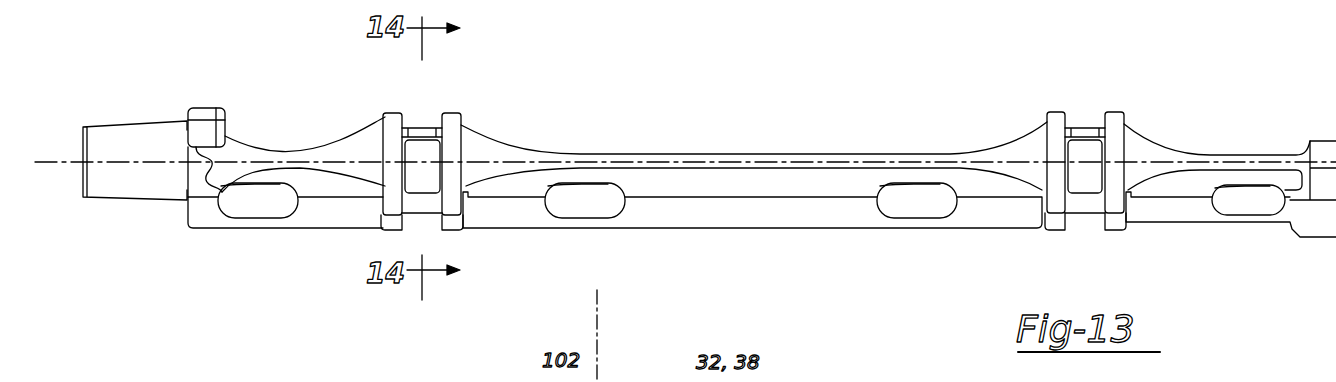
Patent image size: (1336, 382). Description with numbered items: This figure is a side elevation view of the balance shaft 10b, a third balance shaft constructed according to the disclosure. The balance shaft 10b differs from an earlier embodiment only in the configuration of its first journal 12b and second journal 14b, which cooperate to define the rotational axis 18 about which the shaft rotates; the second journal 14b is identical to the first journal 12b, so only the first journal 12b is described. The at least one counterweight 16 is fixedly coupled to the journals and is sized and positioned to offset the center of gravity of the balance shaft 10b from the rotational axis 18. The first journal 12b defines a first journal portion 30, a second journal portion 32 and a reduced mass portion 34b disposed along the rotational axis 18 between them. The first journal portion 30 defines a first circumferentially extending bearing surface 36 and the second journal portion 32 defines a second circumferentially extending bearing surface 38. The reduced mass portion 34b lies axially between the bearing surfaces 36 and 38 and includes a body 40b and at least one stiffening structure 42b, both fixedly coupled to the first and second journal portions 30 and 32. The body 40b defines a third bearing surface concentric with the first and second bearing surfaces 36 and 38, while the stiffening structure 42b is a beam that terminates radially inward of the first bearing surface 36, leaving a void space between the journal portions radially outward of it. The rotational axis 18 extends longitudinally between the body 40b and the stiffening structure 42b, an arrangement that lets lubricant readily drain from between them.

The balance shaft 10b is at (968, 108).
The first journal 12b is at (455, 79).
The second journal 14b is at (1088, 215).
The counterweight 16 is at (998, 208).
The rotational axis 18 is at (53, 162).
The first journal portion 30 is at (396, 113).
The second journal portion 32 is at (450, 112).
The reduced mass portion 34b is at (428, 203).
The first circumferentially extending bearing surface 36 is at (393, 145).
The second circumferentially extending bearing surface 38 is at (450, 136).
The body 40b is at (392, 228).
The stiffening structure 42b is at (420, 128).